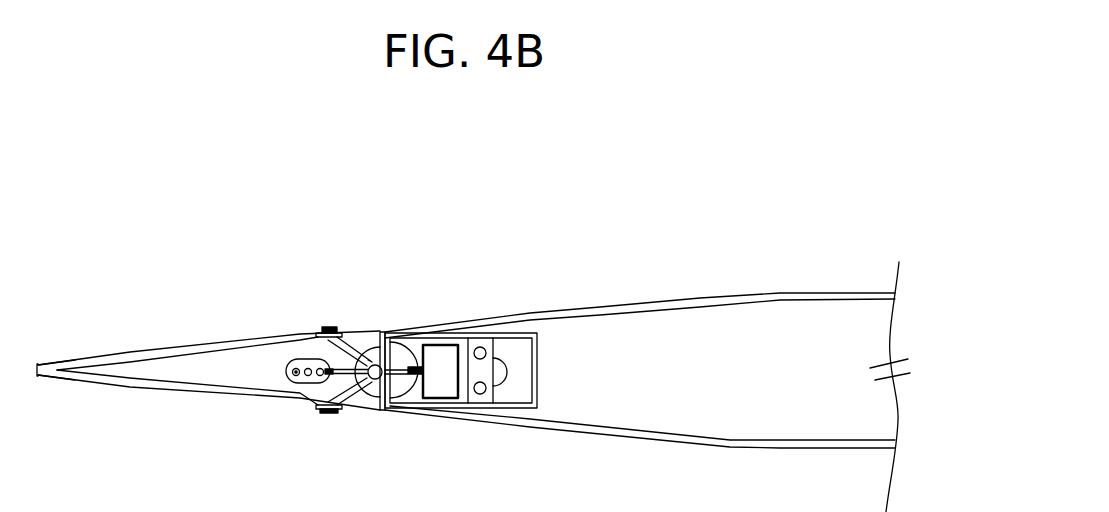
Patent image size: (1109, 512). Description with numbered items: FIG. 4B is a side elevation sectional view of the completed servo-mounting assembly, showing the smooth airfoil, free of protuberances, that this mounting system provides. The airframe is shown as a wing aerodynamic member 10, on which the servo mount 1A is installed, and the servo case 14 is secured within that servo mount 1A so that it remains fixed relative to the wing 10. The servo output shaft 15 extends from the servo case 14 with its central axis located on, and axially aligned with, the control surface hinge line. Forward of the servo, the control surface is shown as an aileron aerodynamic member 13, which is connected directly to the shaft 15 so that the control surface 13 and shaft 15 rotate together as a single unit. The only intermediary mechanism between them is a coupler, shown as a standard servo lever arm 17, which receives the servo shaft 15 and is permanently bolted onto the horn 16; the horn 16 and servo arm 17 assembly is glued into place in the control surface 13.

The wing aerodynamic member 10 is at (697, 353).
The aileron aerodynamic member 13 is at (234, 368).
The servo case 14 is at (442, 365).
The servo output shaft 15 is at (375, 355).
The horn 16 is at (135, 354).
The servo lever arm 17 is at (322, 364).
The servo mount 1A is at (521, 350).